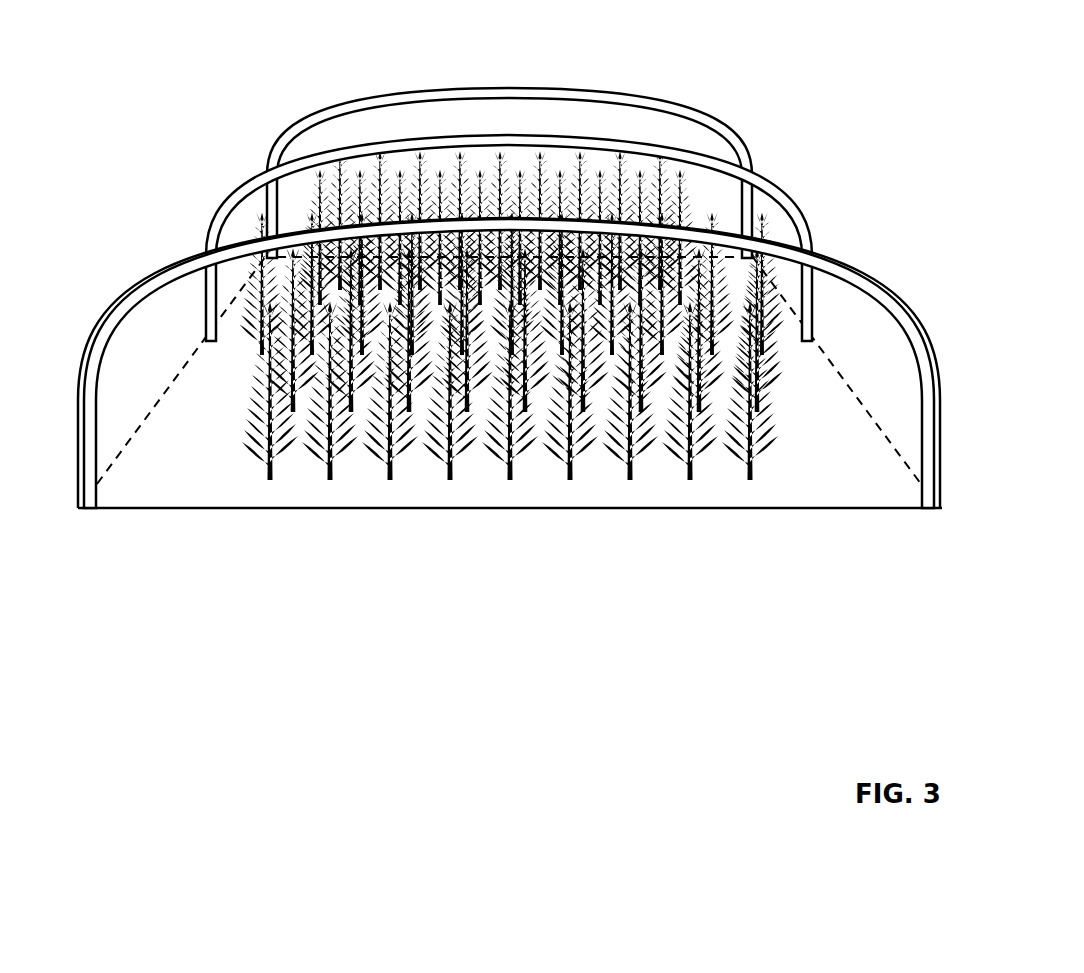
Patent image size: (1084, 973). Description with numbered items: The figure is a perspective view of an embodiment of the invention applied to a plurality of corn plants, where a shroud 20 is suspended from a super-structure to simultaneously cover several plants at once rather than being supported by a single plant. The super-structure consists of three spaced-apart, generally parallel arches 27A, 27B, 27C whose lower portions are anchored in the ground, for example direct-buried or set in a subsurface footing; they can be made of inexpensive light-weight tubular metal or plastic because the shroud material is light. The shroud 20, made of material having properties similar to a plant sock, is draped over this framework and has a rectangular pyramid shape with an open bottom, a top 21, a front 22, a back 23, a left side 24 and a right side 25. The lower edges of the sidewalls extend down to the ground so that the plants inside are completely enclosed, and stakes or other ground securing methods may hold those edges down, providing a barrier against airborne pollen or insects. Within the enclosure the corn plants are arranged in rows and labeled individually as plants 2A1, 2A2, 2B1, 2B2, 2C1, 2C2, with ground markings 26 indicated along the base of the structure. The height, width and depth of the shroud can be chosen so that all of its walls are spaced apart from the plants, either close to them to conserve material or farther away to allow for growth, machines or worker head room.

The shroud 20 is at (507, 302).
The top 21 is at (772, 217).
The front 22 is at (597, 475).
The back 23 is at (687, 113).
The left side 24 is at (145, 273).
The right side 25 is at (903, 298).
The ground boundary line 26 is at (797, 507).
The arch 27A is at (110, 325).
The arch 27B is at (258, 178).
The arch 27C is at (350, 110).
The plant in row A (first) 2A1 is at (268, 460).
The plant in row A (second) 2A2 is at (293, 393).
The plant in row B (first) 2B1 is at (388, 460).
The plant in row B (second) 2B2 is at (396, 394).
The plant in row C (first) 2C1 is at (508, 460).
The plant in row C (second) 2C2 is at (514, 390).